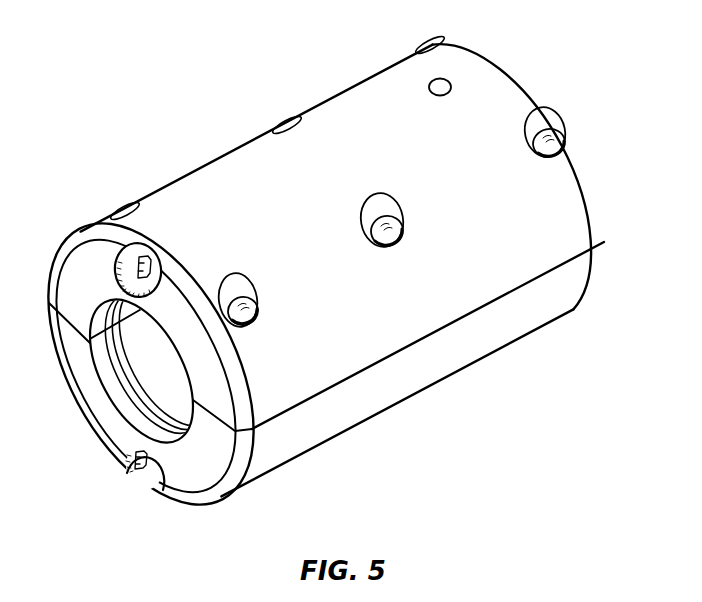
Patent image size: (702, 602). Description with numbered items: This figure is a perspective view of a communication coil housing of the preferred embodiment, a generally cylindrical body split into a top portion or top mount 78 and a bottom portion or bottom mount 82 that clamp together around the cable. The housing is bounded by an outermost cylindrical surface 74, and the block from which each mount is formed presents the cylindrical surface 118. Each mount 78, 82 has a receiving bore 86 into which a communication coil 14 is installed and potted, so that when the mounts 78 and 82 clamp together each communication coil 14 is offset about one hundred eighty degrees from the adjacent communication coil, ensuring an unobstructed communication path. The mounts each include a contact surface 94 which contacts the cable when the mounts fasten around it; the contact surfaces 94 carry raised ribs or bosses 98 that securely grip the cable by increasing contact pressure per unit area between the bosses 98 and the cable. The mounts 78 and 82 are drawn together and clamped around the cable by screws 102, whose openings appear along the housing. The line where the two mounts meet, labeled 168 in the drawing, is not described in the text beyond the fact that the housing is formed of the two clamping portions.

The communication coil 14 is at (137, 268).
The outermost cylindrical surface 74 is at (490, 60).
The top mount 78 is at (377, 70).
The bottom mount 82 is at (388, 408).
The receiving bore 86 is at (113, 276).
The contact surface 94 is at (175, 377).
The bosses 98 is at (123, 380).
The screws 102 is at (565, 140).
The cylindrical surface 118 is at (330, 201).
The split line 168 is at (443, 305).